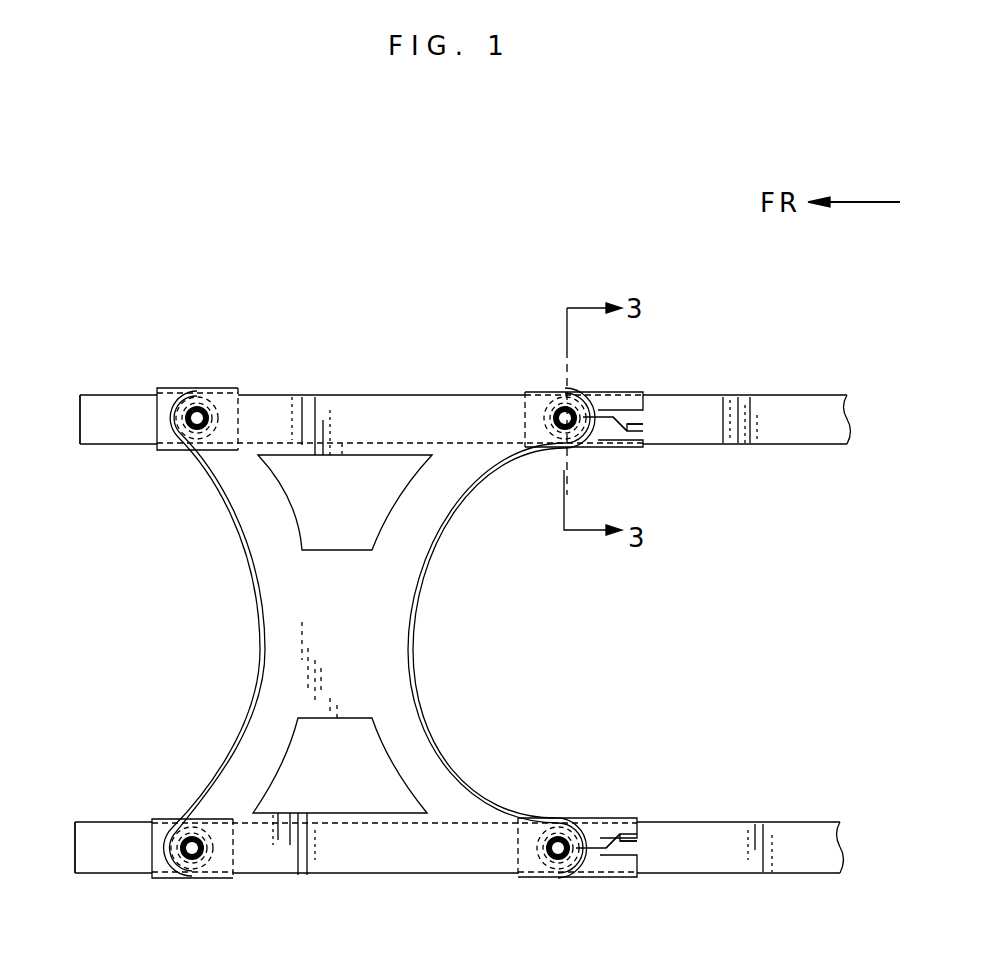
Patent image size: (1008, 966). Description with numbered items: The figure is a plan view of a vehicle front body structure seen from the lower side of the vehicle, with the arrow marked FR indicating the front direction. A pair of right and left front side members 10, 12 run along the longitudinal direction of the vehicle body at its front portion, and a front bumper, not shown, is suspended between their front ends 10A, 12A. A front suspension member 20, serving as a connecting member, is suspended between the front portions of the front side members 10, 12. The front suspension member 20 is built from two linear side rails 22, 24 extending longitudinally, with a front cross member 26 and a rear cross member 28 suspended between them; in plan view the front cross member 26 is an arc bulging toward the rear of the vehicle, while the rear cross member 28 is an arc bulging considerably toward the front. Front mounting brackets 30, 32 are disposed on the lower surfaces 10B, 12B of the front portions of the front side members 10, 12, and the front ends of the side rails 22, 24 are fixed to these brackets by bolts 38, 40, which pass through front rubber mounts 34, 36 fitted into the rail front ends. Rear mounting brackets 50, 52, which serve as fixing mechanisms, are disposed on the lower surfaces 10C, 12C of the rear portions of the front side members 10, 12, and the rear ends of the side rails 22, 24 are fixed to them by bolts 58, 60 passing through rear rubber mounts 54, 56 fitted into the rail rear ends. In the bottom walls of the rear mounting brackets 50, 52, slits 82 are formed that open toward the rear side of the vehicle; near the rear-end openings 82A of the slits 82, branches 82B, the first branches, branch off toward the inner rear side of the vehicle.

The front side member 10 is at (760, 392).
The front end of front side member 10A is at (80, 414).
The lower surface of front portion of front side member 10B is at (146, 408).
The lower surface of rear portion of front side member 10C is at (655, 408).
The front side member 12 is at (696, 874).
The front end of front side member 12A is at (75, 848).
The lower surface of front portion of front side member 12B is at (118, 857).
The lower surface of rear portion of front side member 12C is at (650, 853).
The front suspension member 20 is at (224, 611).
The side rail 22 is at (367, 408).
The side rail 24 is at (370, 858).
The front cross member 26 is at (268, 532).
The rear cross member 28 is at (408, 528).
The front mounting bracket 30 is at (171, 390).
The front mounting bracket 32 is at (161, 820).
The front rubber mount 34 is at (218, 415).
The front rubber mount 36 is at (212, 852).
The bolt 38 is at (205, 412).
The bolt 40 is at (192, 853).
The rear mounting bracket 50 is at (634, 388).
The rear mounting bracket 52 is at (630, 818).
The rear rubber mount 54 is at (547, 410).
The rear rubber mount 56 is at (538, 838).
The bolt 58 is at (558, 408).
The bolt 60 is at (558, 860).
The slit 82 is at (608, 416).
The rear-end opening of slit 82A is at (645, 422).
The branch 82B is at (628, 434).